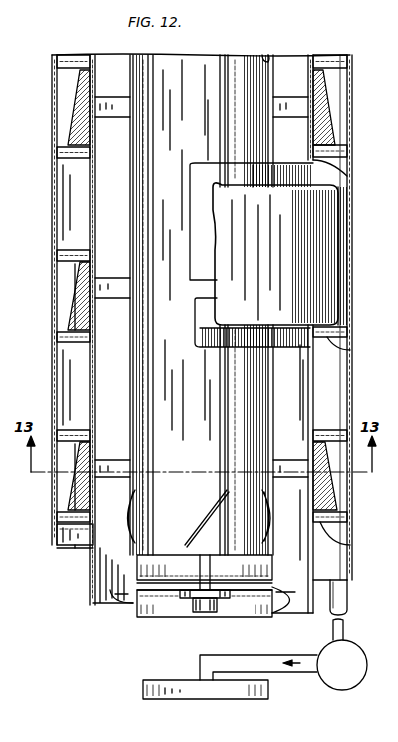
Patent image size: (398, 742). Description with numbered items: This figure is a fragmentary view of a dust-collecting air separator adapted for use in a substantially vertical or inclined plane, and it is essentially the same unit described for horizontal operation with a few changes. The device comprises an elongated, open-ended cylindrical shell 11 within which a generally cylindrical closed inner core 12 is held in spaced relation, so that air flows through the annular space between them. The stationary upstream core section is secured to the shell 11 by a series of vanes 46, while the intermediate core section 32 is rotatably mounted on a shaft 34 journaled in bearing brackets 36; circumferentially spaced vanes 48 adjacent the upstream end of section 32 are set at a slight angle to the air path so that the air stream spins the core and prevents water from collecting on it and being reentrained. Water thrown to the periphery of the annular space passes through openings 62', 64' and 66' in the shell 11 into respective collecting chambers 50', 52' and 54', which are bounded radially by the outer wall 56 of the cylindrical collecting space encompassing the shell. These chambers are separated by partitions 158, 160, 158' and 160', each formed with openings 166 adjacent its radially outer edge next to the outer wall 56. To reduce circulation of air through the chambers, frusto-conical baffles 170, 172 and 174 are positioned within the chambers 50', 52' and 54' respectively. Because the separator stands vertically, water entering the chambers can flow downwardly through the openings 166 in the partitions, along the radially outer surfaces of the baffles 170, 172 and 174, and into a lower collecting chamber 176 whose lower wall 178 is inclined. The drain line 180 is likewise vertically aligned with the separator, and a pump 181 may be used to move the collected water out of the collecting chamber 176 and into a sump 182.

The cylindrical shell 11 is at (90, 378).
The inner core 12 is at (272, 385).
The intermediate core section 32 is at (268, 62).
The shaft 34 is at (206, 568).
The bearing brackets 36 is at (190, 608).
The vanes 46 is at (123, 600).
The vanes 48 is at (210, 506).
The collecting chamber 50' is at (54, 476).
The collecting chamber 52' is at (54, 296).
The collecting chamber 54' is at (54, 107).
The outer wall 56 is at (352, 380).
The opening 62' is at (161, 475).
The opening 64' is at (74, 287).
The opening 66' is at (243, 107).
The partition 158 is at (357, 537).
The partition 158' is at (361, 347).
The partition 160 is at (354, 418).
The partition 160' is at (52, 231).
The openings 166 is at (57, 80).
The frusto-conical baffle 170 is at (80, 462).
The frusto-conical baffle 172 is at (75, 270).
The frusto-conical baffle 174 is at (320, 100).
The collecting chamber 176 is at (326, 560).
The lower wall 178 is at (75, 546).
The drain line 180 is at (347, 597).
The pump 181 is at (345, 683).
The sump 182 is at (262, 696).